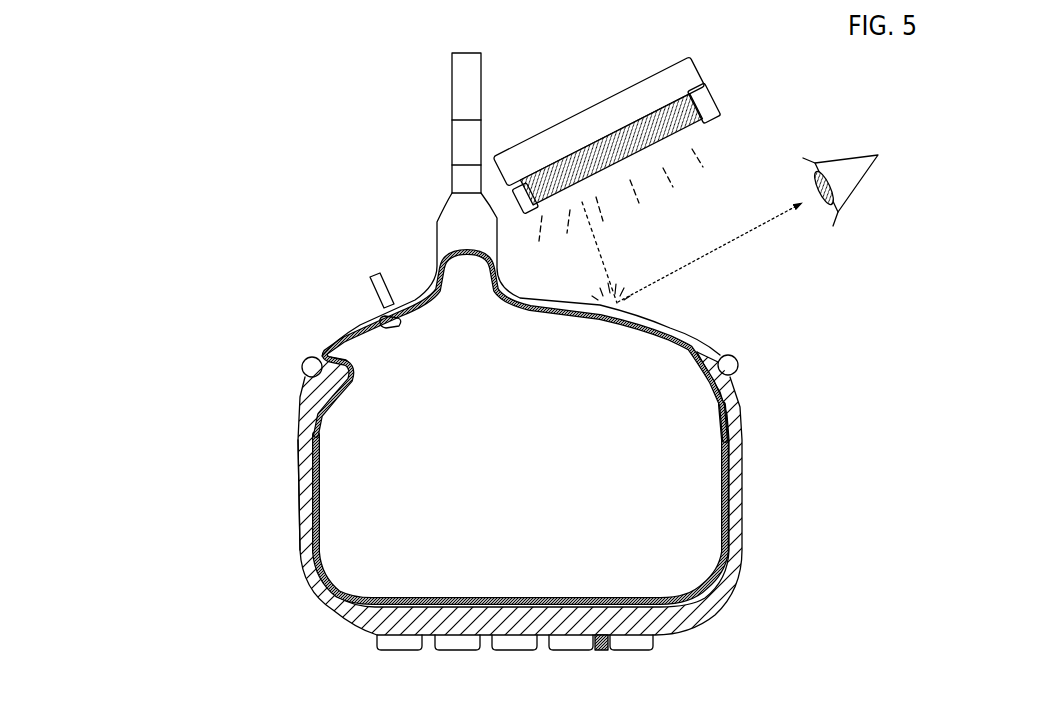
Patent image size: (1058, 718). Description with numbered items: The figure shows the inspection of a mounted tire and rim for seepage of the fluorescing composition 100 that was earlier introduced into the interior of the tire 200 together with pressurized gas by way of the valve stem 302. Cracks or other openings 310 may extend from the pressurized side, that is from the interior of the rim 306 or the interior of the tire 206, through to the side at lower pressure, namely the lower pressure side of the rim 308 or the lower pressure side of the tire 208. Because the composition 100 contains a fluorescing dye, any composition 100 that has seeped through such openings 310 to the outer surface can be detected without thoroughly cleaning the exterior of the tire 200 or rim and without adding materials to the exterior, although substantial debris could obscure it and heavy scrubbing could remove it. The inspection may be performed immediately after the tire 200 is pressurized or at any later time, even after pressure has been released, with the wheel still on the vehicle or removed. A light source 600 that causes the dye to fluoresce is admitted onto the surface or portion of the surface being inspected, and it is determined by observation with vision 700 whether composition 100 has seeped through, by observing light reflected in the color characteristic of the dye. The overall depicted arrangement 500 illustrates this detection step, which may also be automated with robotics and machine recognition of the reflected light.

The composition 100 is at (530, 594).
The tire 200 is at (302, 480).
The interior of tire 206 is at (298, 575).
The lower pressure side of tire 208 is at (322, 553).
The valve stem 302 is at (363, 297).
The interior of rim 306 is at (325, 325).
The lower pressure side of rim 308 is at (366, 337).
The cracks or other openings 310 is at (573, 598).
The tire and wheel assembly 500 is at (400, 228).
The light source 600 is at (696, 144).
The vision 700 is at (858, 222).